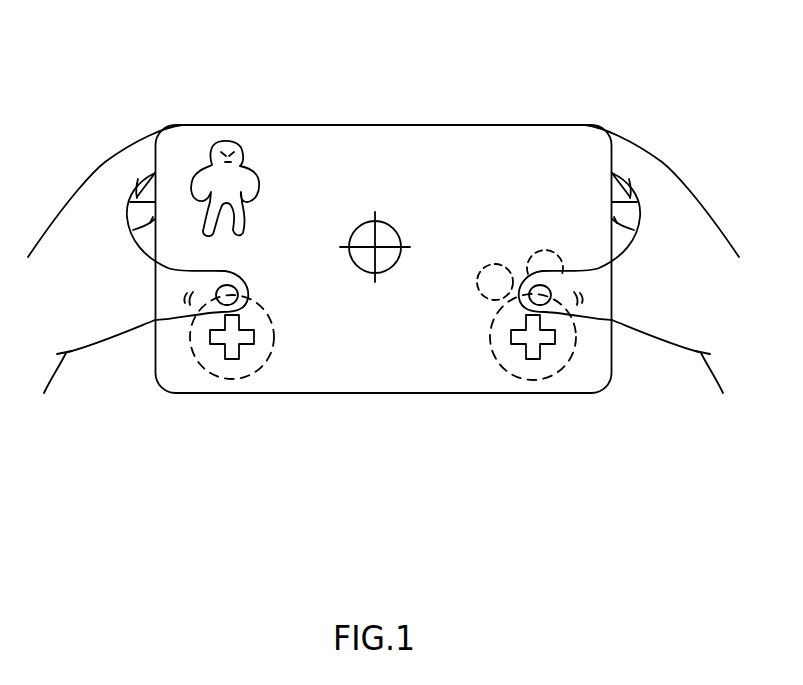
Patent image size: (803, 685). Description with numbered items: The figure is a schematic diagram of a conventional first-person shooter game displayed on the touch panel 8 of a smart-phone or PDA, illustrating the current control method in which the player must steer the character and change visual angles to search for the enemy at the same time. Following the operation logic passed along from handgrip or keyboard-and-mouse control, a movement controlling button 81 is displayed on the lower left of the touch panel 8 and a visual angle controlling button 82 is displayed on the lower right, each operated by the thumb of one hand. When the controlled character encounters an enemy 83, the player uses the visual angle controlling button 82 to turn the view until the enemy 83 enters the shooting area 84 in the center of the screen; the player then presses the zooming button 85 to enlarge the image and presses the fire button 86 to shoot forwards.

The touch panel 8 is at (162, 380).
The movement controlling button 81 is at (232, 357).
The visual angle controlling button 82 is at (533, 355).
The enemy 83 is at (210, 150).
The shooting area 84 is at (368, 228).
The zooming button 85 is at (478, 272).
The fire button 86 is at (543, 263).